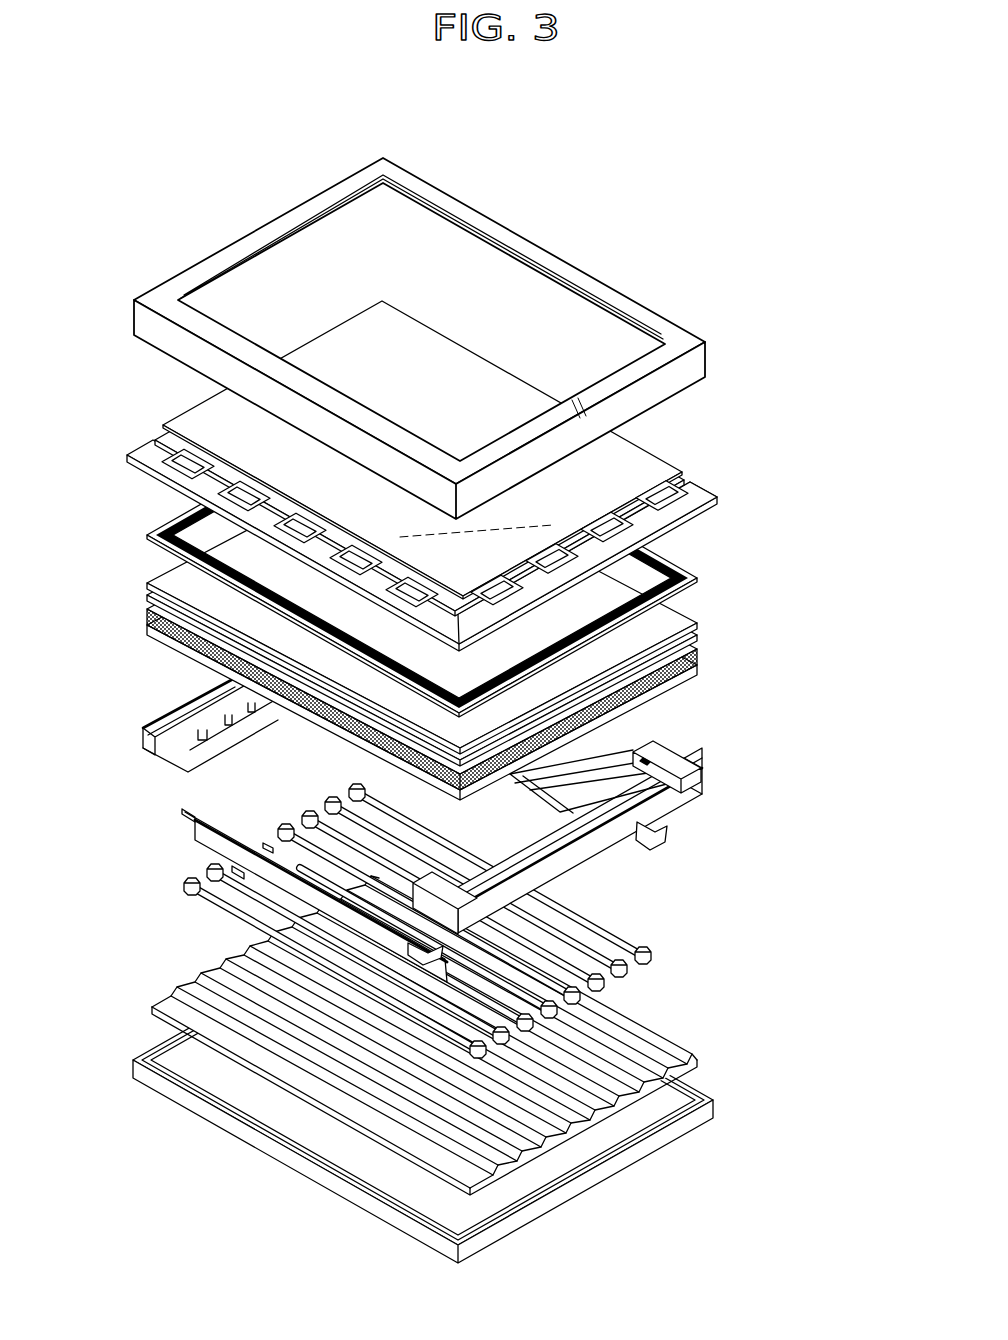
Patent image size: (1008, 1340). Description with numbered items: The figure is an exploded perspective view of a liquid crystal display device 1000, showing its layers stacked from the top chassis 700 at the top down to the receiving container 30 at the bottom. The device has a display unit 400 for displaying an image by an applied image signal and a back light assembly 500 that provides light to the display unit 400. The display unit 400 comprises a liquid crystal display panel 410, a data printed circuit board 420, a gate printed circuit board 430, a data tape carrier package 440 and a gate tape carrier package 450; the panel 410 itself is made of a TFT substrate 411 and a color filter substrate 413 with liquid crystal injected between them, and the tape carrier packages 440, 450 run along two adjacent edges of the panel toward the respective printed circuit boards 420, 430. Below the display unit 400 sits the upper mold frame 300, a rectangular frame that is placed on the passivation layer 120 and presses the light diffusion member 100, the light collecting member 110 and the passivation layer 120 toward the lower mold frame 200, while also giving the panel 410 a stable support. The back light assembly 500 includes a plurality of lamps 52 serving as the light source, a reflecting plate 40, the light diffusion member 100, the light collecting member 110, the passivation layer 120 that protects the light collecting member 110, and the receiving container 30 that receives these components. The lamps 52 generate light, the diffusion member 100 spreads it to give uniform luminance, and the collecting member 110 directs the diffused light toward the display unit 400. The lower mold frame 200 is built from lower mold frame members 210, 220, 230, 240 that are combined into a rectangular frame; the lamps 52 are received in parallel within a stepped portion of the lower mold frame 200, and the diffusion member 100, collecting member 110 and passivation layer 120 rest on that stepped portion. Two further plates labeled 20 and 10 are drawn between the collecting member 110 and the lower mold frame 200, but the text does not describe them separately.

The liquid crystal display device 1000 is at (430, 93).
The top chassis 700 is at (700, 366).
The display unit 400 is at (448, 476).
The liquid crystal display panel 410 is at (489, 458).
The color filter substrate 413 is at (660, 470).
The TFT substrate 411 is at (683, 481).
The data printed circuit board 420 is at (148, 459).
The gate printed circuit board 430 is at (660, 520).
The data tape carrier package 440 is at (203, 458).
The gate tape carrier package 450 is at (607, 525).
The upper mold frame 300 is at (693, 580).
The back light assembly 500 is at (490, 860).
The passivation layer 120 is at (460, 606).
The light collecting member 110 is at (690, 645).
The light diffusion member 100 is at (477, 642).
The diffusion plate 20 is at (690, 660).
The light guide plate 10 is at (667, 683).
The lower mold frame 200 is at (447, 819).
The lower mold frame member 210 is at (600, 772).
The lower mold frame member 220 is at (197, 833).
The lower mold frame member 230 is at (190, 693).
The lower mold frame member 240 is at (683, 798).
The lamp 52 is at (622, 946).
The reflecting plate 40 is at (647, 1047).
The receiving container 30 is at (673, 1138).